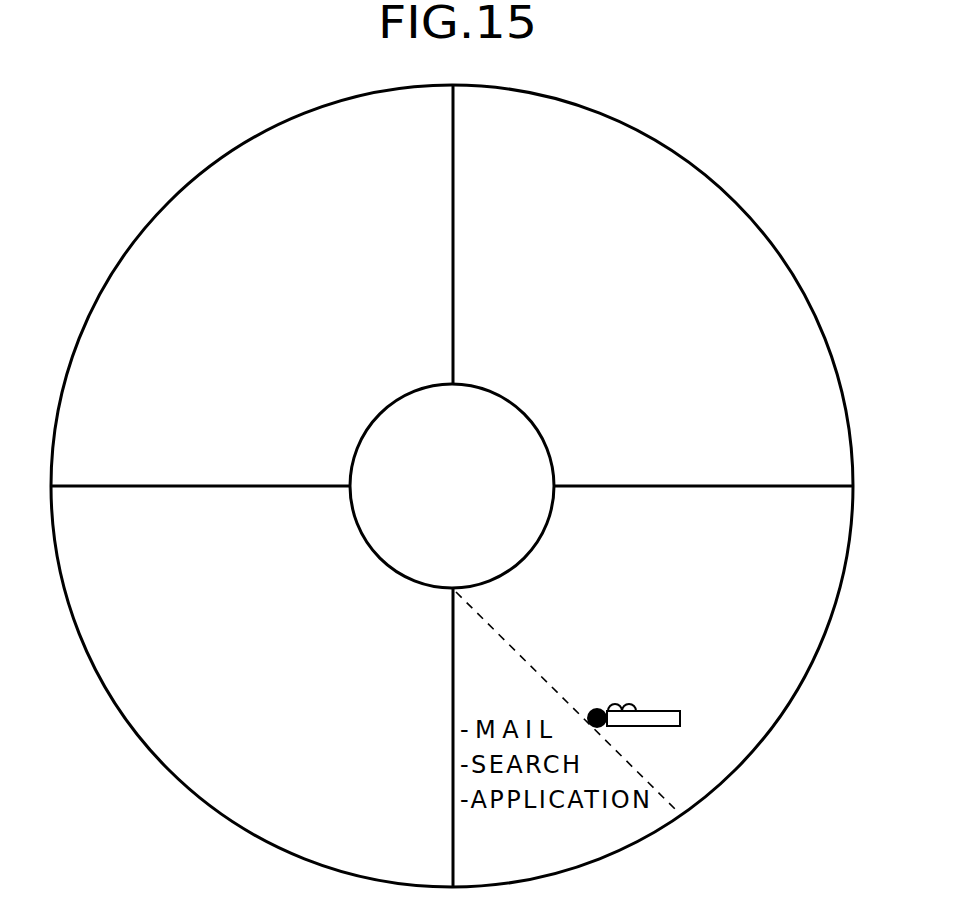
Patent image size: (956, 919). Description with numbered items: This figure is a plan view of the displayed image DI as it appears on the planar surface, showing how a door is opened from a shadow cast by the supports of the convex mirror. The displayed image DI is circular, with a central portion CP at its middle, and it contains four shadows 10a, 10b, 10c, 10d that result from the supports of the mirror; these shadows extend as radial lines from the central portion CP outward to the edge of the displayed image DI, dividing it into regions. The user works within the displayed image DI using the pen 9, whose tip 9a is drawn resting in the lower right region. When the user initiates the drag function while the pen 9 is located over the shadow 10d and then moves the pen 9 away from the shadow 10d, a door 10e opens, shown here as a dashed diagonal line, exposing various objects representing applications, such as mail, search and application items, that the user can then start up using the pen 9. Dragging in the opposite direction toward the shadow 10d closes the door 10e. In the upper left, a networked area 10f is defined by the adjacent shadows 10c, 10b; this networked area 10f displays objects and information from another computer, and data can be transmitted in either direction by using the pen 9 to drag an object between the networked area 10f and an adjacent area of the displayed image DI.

The displayed image DI is at (727, 150).
The center portion CP is at (498, 425).
The shadow 10a is at (593, 485).
The shadow 10b is at (455, 224).
The shadow 10c is at (218, 485).
The shadow 10d is at (450, 832).
The door 10e is at (510, 645).
The networked area 10f is at (212, 221).
The pen 9 is at (652, 707).
The pointer tip 9a is at (597, 706).